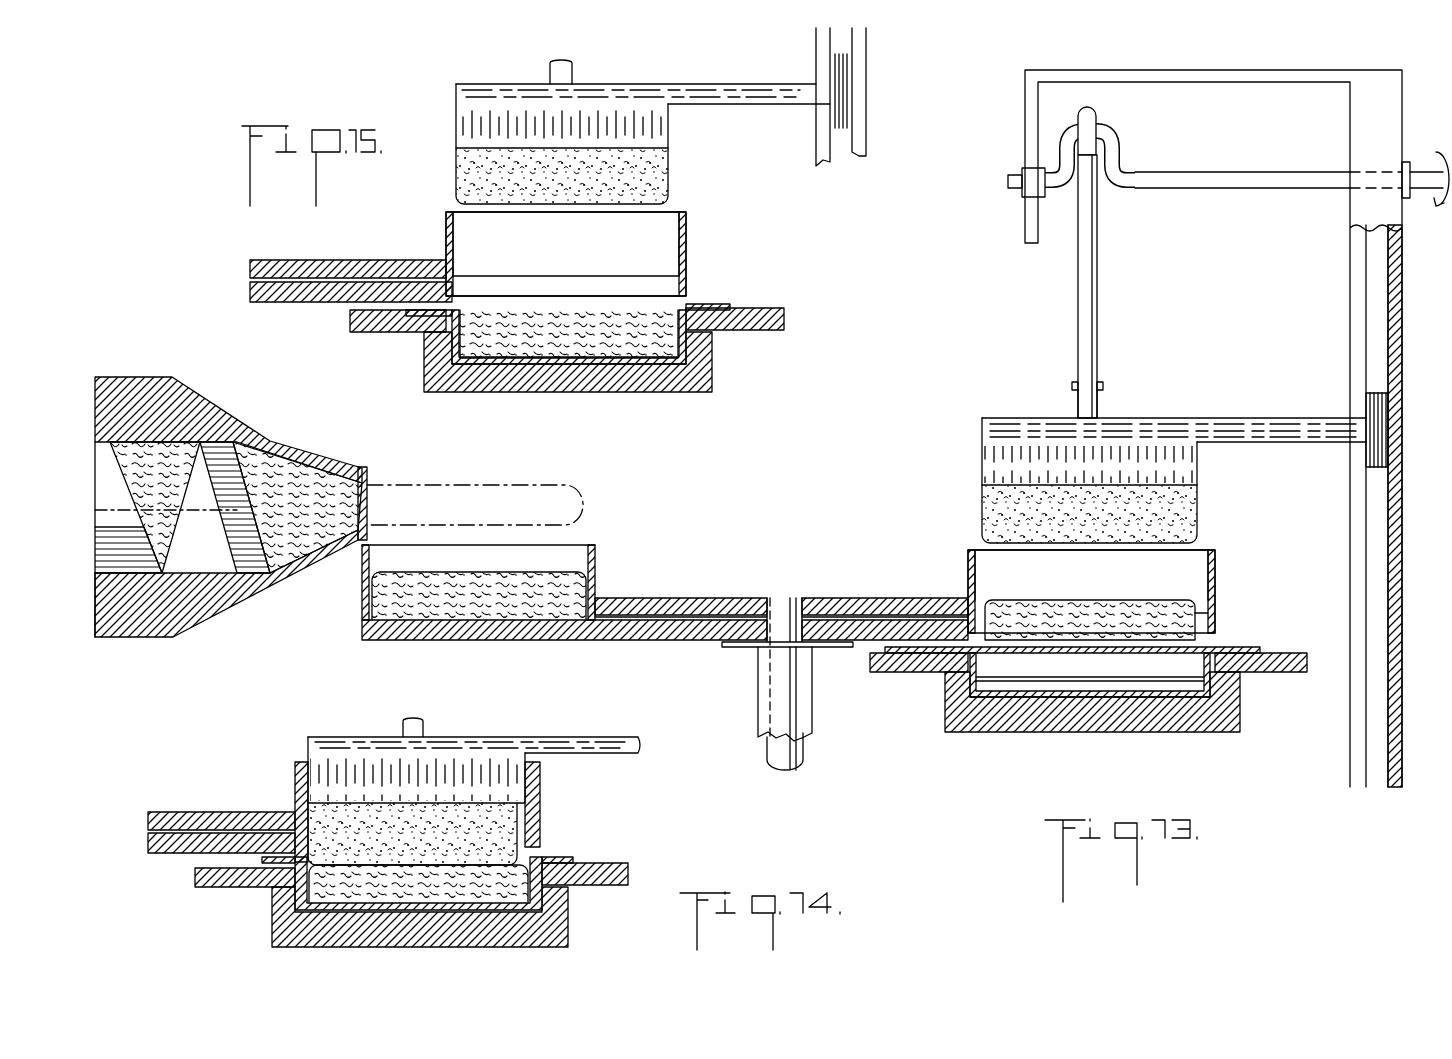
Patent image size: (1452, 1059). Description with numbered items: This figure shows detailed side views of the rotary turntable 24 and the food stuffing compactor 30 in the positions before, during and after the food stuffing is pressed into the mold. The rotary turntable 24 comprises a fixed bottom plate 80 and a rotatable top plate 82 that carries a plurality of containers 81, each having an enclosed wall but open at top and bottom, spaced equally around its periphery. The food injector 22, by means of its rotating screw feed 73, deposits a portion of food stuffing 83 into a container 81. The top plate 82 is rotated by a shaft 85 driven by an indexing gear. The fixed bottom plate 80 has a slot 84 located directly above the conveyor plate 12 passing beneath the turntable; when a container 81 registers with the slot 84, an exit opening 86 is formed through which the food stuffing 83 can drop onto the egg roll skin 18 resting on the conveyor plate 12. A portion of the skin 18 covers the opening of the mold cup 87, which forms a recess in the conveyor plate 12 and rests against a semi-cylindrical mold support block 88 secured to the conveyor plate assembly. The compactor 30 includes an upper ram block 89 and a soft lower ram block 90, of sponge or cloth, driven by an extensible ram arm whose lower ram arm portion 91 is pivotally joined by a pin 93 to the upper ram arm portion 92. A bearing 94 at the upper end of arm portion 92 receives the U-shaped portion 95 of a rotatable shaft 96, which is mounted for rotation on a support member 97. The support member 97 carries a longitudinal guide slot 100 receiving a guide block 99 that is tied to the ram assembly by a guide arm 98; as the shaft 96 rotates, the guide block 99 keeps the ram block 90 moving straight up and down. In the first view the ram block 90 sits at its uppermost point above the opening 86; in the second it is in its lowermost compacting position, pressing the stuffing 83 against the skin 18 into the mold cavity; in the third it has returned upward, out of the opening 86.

In FIG. 15, the conveyor plate 12 is at (766, 332).
In FIG. 14, the conveyor plate 12 is at (620, 876).
In FIG. 13, the conveyor plate 12 is at (1297, 674).
In FIG. 15, the egg roll skin 18 is at (728, 308).
In FIG. 14, the egg roll skin 18 is at (548, 862).
In FIG. 13, the egg roll skin 18 is at (1263, 648).
In FIG. 14, the food injector 22 is at (171, 628).
In FIG. 14, the rotary turntable 24 is at (862, 560).
In FIG. 13, the food stuffing compactor 30 is at (1248, 290).
In FIG. 14, the screw feed 73 is at (222, 458).
In FIG. 15, the fixed bottom plate 80 is at (286, 304).
In FIG. 14, the fixed bottom plate 80 is at (606, 641).
In FIG. 15, the container 81 is at (686, 250).
In FIG. 14, the container 81 is at (596, 556).
In FIG. 13, the container 81 is at (1215, 591).
In FIG. 15, the rotatable top plate 82 is at (320, 262).
In FIG. 14, the rotatable top plate 82 is at (676, 605).
In FIG. 15, the food stuffing 83 is at (569, 334).
In FIG. 14, the food stuffing 83 is at (580, 488).
In FIG. 13, the food stuffing 83 is at (1078, 607).
In FIG. 15, the slot 84 is at (688, 286).
In FIG. 13, the slot 84 is at (1215, 621).
In FIG. 14, the shaft 85 is at (791, 755).
In FIG. 15, the exit opening 86 is at (662, 226).
In FIG. 13, the exit opening 86 is at (1185, 563).
In FIG. 15, the mold cup 87 is at (644, 366).
In FIG. 14, the mold cup 87 is at (560, 912).
In FIG. 13, the mold cup 87 is at (1118, 700).
In FIG. 15, the mold support block 88 is at (488, 386).
In FIG. 14, the mold support block 88 is at (288, 934).
In FIG. 13, the mold support block 88 is at (1006, 722).
In FIG. 15, the upper ram block 89 is at (670, 124).
In FIG. 14, the upper ram block 89 is at (510, 784).
In FIG. 13, the upper ram block 89 is at (1188, 473).
In FIG. 15, the lower ram block 90 is at (670, 168).
In FIG. 14, the lower ram block 90 is at (510, 818).
In FIG. 13, the lower ram block 90 is at (1186, 526).
In FIG. 15, the ram arm portion 91 is at (573, 62).
In FIG. 13, the ram arm portion 91 is at (1080, 405).
In FIG. 13, the ram arm portion 92 is at (1094, 340).
In FIG. 13, the pin 93 is at (1104, 386).
In FIG. 13, the bearing 94 is at (1097, 113).
In FIG. 13, the U-shaped portion 95 is at (1123, 144).
In FIG. 13, the rotatable shaft 96 is at (1222, 174).
In FIG. 13, the support member 97 is at (1253, 73).
In FIG. 15, the guide arm 98 is at (687, 84).
In FIG. 14, the guide arm 98 is at (570, 738).
In FIG. 13, the guide arm 98 is at (1270, 432).
In FIG. 13, the guide block 99 is at (1384, 452).
In FIG. 15, the guide slot 100 is at (848, 146).
In FIG. 13, the guide slot 100 is at (1382, 315).